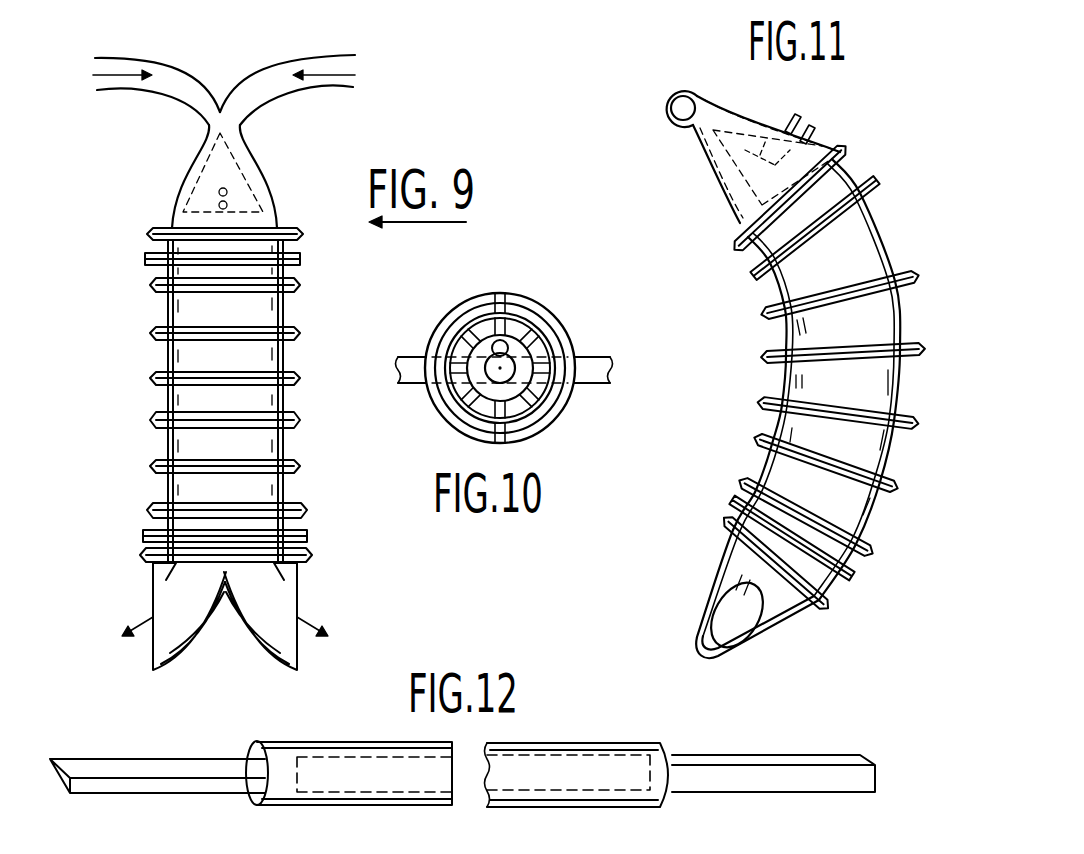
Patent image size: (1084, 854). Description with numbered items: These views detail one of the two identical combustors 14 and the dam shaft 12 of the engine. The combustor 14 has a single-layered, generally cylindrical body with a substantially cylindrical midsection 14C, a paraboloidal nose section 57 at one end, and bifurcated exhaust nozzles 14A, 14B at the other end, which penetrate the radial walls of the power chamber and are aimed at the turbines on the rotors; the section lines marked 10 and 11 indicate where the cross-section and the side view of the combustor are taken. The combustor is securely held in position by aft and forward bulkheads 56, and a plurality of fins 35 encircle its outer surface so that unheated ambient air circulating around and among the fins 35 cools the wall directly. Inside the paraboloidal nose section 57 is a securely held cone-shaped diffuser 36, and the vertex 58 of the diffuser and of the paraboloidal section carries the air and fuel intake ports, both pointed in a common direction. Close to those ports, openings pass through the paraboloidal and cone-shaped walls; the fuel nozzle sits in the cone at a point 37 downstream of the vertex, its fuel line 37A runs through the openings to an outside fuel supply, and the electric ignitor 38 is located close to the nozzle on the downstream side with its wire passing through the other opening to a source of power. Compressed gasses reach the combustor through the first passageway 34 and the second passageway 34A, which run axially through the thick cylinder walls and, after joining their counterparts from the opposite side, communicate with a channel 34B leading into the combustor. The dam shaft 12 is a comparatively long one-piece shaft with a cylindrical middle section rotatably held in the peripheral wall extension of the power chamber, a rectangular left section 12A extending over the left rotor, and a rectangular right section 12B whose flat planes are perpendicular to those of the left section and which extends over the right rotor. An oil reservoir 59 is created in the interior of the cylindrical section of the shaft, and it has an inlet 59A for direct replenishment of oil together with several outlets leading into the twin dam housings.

In FIG. 9, the section line 10- 10 is at (317, 206).
In FIG. 9, the section line 11- 11 is at (33, 678).
In FIG. 12, the shaft 12 is at (413, 807).
In FIG. 12, the rectangular left section 12A is at (82, 757).
In FIG. 12, the rectangular right section 12B is at (800, 752).
In FIG. 9, the combustor 14 is at (167, 357).
In FIG. 11, the combustor 14 is at (723, 622).
In FIG. 9, the bifurcated exhaust nozzle 14A is at (180, 595).
In FIG. 9, the bifurcated exhaust nozzle 14B is at (273, 593).
In FIG. 9, the cylindrical midsection 14C is at (247, 317).
In FIG. 10, the first passageway 34 is at (595, 359).
In FIG. 11, the first passageway 34 is at (681, 101).
In FIG. 9, the second passageway 34A is at (177, 97).
In FIG. 9, the channel 34B is at (290, 90).
In FIG. 9, the fins 35 is at (300, 421).
In FIG. 11, the fins 35 is at (735, 236).
In FIG. 11, the cone-shaped diffuser 36 is at (745, 177).
In FIG. 9, the opening for fuel line 37 is at (227, 189).
In FIG. 11, the fuel line 37A is at (798, 118).
In FIG. 11, the electric ignitor 38 is at (813, 130).
In FIG. 9, the bulkheads 56 is at (157, 263).
In FIG. 11, the paraboloidal nose section 57 is at (707, 160).
In FIG. 9, the vertex 58 is at (220, 128).
In FIG. 12, the oil reservoir 59 is at (374, 774).
In FIG. 12, the oil inlet 59A is at (557, 748).